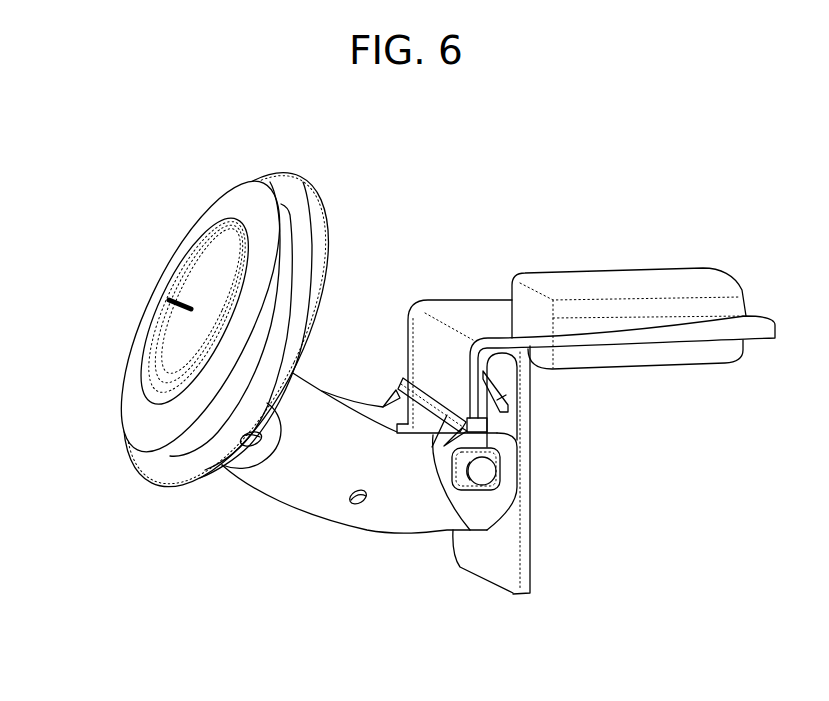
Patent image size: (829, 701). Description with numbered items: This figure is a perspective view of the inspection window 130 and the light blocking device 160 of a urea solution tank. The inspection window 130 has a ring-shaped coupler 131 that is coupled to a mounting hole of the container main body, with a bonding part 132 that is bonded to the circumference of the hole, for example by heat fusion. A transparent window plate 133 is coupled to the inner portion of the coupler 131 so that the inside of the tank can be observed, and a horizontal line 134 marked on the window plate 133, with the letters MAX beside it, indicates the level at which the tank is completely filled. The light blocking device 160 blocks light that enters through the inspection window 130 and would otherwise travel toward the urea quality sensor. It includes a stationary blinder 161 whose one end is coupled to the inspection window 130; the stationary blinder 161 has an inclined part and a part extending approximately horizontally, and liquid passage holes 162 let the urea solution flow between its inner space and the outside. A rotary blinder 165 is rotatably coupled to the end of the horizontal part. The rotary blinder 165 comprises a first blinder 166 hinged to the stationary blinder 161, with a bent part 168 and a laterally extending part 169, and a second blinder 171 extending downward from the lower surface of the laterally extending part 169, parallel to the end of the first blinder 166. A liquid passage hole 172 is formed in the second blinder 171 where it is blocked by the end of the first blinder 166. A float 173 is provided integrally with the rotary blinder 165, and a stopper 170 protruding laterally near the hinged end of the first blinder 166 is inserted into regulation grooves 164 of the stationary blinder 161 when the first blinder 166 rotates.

The inspection window 130 is at (223, 312).
The coupler 131 is at (133, 420).
The bonding part 132 is at (221, 466).
The window plate 133 is at (223, 258).
The horizontal line 134 is at (170, 302).
The light blocking device 160 is at (369, 485).
The stationary blinder 161 is at (292, 500).
The liquid passage holes 162 is at (360, 505).
The regulation grooves 164 is at (390, 392).
The rotary blinder 165 is at (460, 285).
The first blinder 166 is at (618, 478).
The bent part 168 is at (472, 386).
The laterally extending part 169 is at (648, 346).
The stopper 170 is at (473, 532).
The second blinder 171 is at (527, 531).
The liquid passage hole 172 is at (493, 358).
The float 173 is at (627, 287).